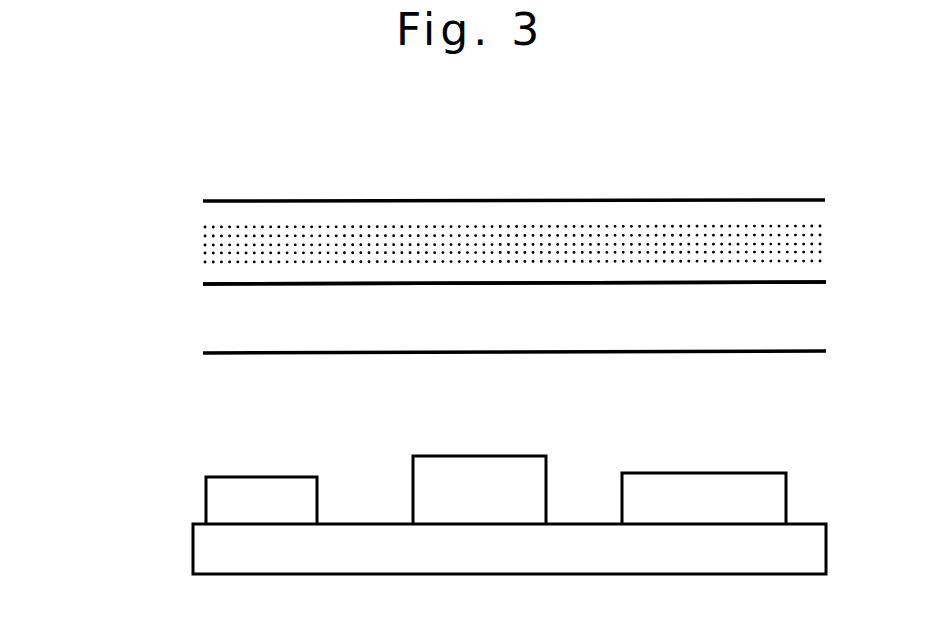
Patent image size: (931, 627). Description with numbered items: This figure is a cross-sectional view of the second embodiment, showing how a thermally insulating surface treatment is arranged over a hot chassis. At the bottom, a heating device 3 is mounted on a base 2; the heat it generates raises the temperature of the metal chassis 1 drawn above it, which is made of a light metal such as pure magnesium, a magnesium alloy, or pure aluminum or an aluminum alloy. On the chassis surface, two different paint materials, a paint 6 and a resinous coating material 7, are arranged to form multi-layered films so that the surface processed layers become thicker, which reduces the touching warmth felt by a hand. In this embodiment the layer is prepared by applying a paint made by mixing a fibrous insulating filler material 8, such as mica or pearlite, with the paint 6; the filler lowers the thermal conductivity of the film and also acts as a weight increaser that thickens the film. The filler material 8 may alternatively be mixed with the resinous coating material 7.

The metal chassis 1 is at (220, 337).
The base 2 is at (210, 556).
The heating device 3 is at (262, 478).
The paint 6 is at (212, 275).
The resinous coating material 7 is at (514, 283).
The insulating filler material 8 is at (695, 242).